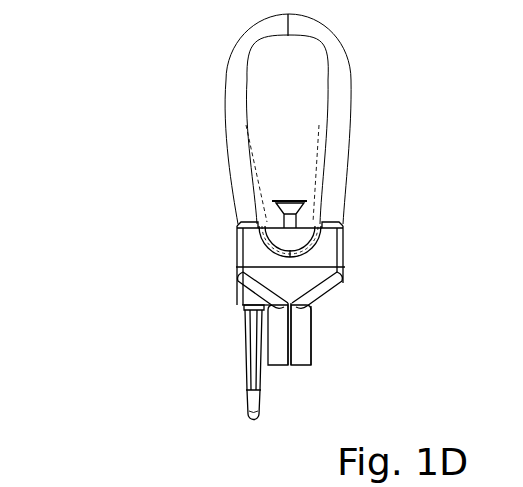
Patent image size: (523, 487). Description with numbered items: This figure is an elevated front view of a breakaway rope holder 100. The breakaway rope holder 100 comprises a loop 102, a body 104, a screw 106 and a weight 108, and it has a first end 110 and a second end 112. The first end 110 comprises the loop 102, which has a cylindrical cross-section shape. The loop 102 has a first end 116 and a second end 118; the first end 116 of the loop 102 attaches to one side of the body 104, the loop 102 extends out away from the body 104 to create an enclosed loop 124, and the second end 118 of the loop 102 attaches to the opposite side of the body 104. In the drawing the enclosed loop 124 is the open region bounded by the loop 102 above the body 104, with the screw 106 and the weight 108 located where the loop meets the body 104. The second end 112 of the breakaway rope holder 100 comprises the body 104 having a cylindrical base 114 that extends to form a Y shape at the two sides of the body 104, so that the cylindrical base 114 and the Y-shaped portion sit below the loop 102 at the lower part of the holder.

The breakaway rope holder 100 is at (119, 31).
The loop 102 is at (340, 140).
The body 104 is at (243, 253).
The screw 106 is at (275, 201).
The weight 108 is at (280, 232).
The first end 110 is at (292, 28).
The second end 112 is at (303, 368).
The cylindrical base 114 is at (312, 345).
The first end of loop 116 is at (328, 220).
The second end of loop 118 is at (248, 393).
The enclosed loop 124 is at (309, 113).